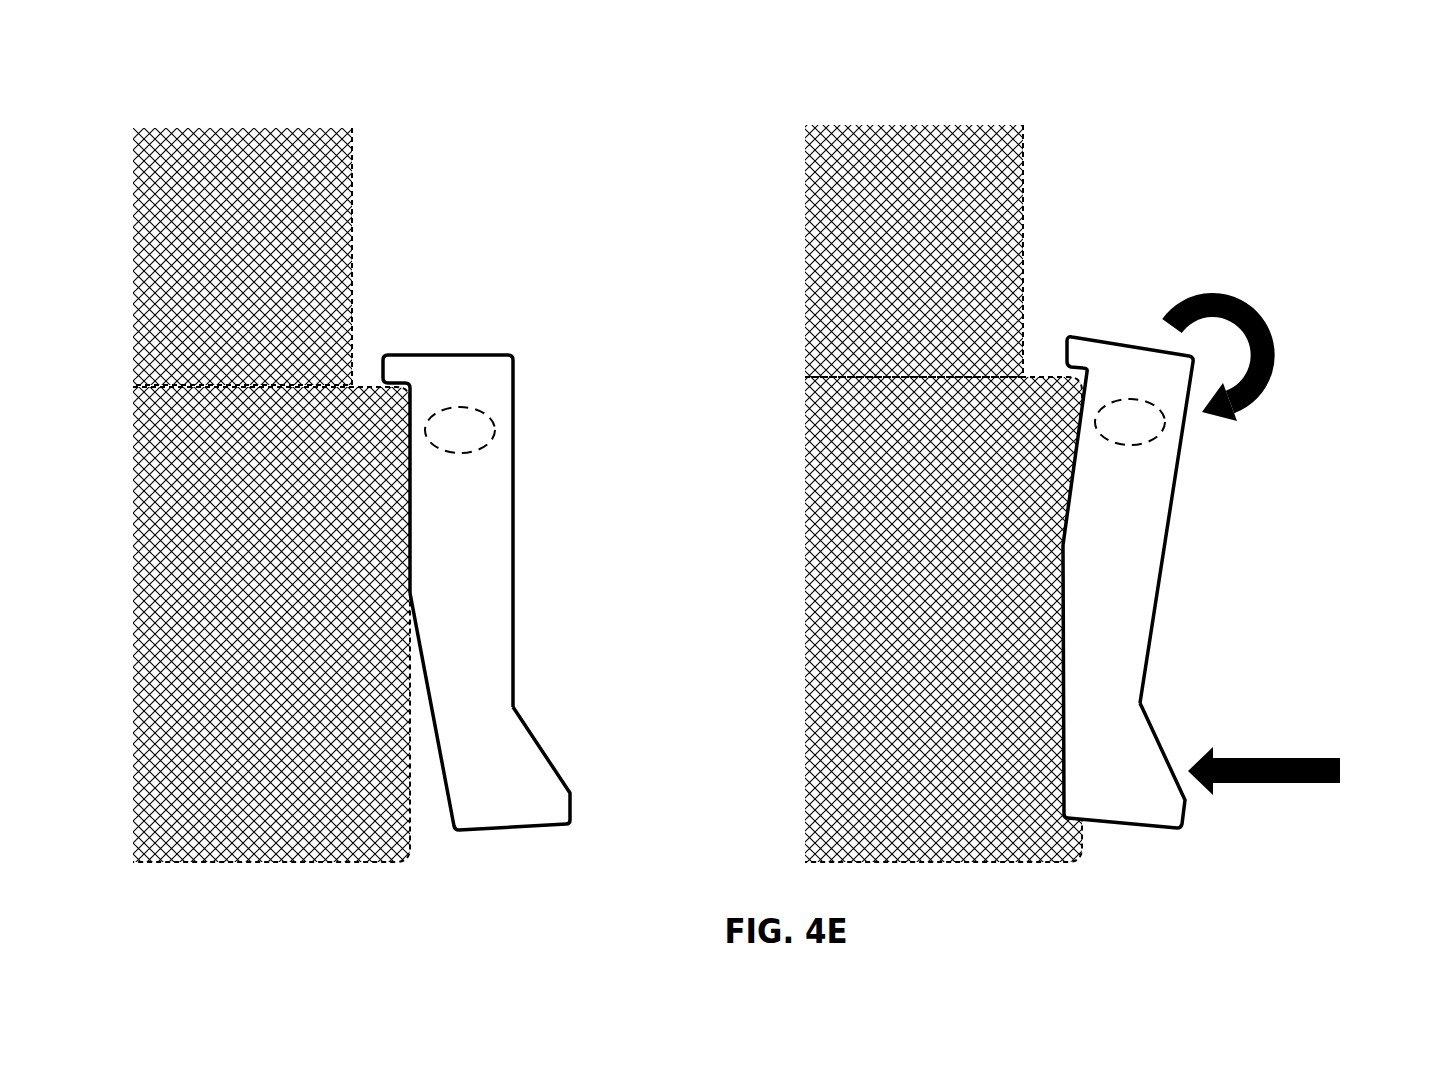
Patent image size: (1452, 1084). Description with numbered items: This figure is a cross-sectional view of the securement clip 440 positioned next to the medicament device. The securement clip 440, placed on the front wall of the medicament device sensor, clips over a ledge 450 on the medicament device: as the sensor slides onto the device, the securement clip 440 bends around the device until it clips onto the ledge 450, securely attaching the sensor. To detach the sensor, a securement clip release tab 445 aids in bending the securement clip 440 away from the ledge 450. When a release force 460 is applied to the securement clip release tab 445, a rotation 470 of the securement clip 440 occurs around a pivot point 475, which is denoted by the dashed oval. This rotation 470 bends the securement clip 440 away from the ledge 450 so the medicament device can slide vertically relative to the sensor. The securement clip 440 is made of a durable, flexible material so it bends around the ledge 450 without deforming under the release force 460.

The securement clip 440 is at (1078, 352).
The securement clip release tab 445 is at (1148, 782).
The ledge 450 is at (362, 385).
The release force 460 is at (1296, 738).
The rotation 470 is at (1322, 322).
The pivot point 475 is at (1155, 437).